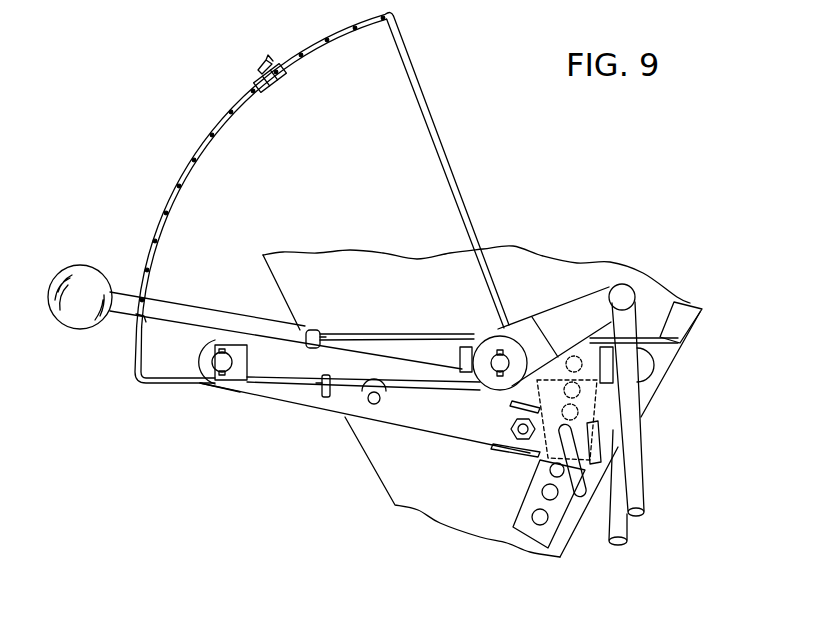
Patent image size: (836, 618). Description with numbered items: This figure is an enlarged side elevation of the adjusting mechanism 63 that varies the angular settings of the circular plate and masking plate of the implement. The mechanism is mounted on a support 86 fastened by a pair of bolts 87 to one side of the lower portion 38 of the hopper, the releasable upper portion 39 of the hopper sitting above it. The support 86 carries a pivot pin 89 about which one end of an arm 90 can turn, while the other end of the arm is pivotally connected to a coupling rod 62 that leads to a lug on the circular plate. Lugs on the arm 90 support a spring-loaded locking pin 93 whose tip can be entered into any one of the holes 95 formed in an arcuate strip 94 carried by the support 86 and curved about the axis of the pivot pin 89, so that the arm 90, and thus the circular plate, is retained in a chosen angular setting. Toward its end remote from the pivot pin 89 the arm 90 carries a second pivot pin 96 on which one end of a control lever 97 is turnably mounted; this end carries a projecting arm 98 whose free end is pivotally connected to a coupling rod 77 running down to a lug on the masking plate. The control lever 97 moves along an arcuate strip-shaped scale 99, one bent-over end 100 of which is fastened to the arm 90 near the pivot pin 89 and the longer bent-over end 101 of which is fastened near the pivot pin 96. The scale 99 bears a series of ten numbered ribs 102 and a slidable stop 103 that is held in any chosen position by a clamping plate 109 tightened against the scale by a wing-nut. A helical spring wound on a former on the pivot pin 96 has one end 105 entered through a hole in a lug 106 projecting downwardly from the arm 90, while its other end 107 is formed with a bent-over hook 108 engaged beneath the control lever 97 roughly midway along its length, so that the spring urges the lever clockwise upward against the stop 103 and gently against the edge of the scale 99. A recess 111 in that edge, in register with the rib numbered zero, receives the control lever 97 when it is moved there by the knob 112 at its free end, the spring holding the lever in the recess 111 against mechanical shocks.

The lower portion of the hopper 38 is at (385, 485).
The upper portion of the hopper 39 is at (298, 255).
The coupling rod 62 is at (628, 530).
The adjusting mechanism 63 is at (430, 90).
The coupling rod 77 is at (636, 458).
The support 86 is at (428, 430).
The bolts 87 is at (373, 407).
The pivot pin 89 is at (200, 360).
The arm 90 is at (252, 381).
The locking pin 93 is at (572, 492).
The arcuate strip 94 is at (535, 469).
The holes 95 is at (532, 516).
The pivot pin 96 is at (505, 357).
The control lever 97 is at (182, 308).
The projecting arm 98 is at (575, 306).
The arcuate strip-shaped scale 99 is at (222, 133).
The bent-over end of the scale 100 is at (166, 383).
The longer bent-over end of the scale 101 is at (468, 217).
The ribs 102 is at (192, 158).
The stop 103 is at (262, 78).
The end of the spring 105 is at (427, 393).
The lug 106 is at (318, 395).
The other end of the spring 107 is at (413, 334).
The bent-over hook 108 is at (312, 330).
The clamping plate 109 is at (280, 85).
The recess 111 is at (134, 317).
The knob 112 is at (95, 268).